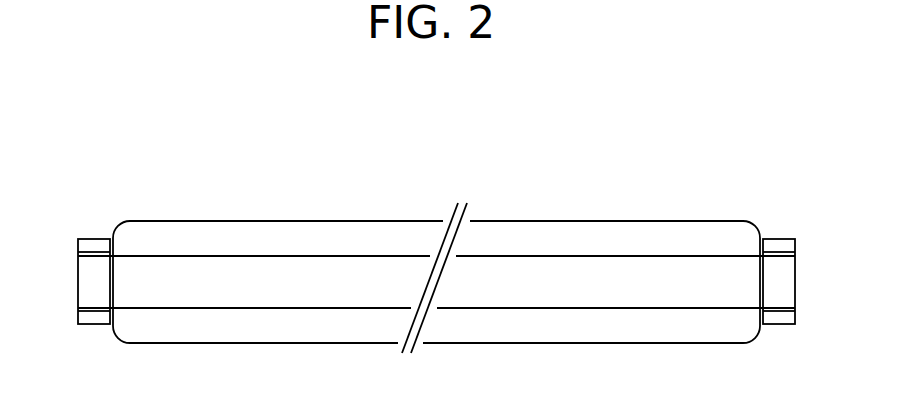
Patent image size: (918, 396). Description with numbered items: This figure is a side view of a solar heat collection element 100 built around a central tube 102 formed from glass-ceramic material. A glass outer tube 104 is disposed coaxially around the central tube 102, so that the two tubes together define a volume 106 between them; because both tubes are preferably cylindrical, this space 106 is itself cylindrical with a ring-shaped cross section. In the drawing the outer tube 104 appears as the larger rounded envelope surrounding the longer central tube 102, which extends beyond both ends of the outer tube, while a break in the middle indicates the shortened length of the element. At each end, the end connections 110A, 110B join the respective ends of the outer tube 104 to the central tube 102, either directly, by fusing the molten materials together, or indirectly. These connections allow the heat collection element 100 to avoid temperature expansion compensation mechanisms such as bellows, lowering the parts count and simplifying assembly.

The solar heat collection element 100 is at (479, 117).
The central tube 102 is at (194, 255).
The outer tube 104 is at (345, 220).
The volume 106 is at (267, 238).
The end connection 110A is at (112, 206).
The end connection 110B is at (767, 210).